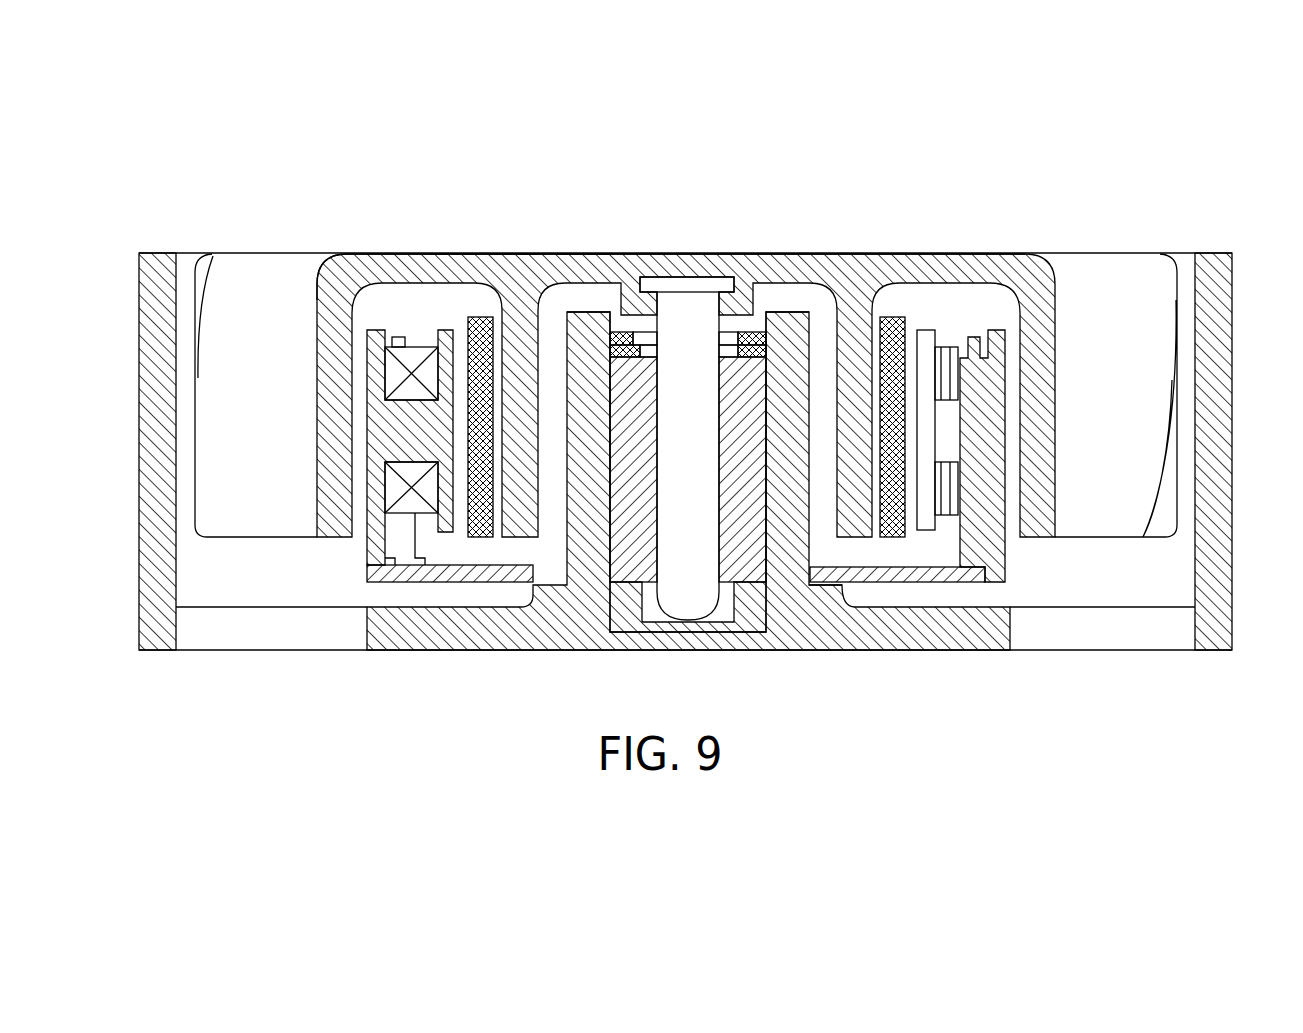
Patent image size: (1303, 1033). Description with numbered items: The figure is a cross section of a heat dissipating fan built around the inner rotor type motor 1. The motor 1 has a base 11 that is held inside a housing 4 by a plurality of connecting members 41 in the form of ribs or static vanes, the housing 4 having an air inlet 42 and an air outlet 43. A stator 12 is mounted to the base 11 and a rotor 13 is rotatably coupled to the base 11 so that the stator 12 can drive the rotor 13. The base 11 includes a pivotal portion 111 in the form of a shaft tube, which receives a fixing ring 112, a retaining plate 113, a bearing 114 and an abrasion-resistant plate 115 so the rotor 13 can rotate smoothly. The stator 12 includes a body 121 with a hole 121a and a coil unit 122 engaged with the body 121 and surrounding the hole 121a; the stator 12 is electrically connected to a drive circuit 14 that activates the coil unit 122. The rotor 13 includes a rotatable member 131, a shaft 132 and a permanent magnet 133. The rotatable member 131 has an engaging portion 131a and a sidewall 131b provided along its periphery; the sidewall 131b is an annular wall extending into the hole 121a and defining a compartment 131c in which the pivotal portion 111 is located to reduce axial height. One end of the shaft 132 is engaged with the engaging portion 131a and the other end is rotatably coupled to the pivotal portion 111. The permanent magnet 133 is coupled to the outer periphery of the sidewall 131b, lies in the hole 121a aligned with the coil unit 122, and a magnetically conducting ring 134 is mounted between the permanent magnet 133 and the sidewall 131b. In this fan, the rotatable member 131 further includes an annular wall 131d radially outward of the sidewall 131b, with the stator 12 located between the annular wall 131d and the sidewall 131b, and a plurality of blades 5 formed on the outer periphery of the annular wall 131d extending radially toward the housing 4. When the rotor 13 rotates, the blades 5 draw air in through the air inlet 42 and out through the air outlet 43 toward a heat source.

The inner rotor type motor 1 is at (270, 173).
The housing 4 is at (162, 257).
The connecting members 41 is at (300, 628).
The air inlet 42 is at (245, 240).
The air outlet 43 is at (198, 660).
The blades 5 is at (230, 253).
The base 11 is at (384, 648).
The pivotal portion 111 is at (583, 488).
The fixing ring 112 is at (757, 372).
The retaining plate 113 is at (782, 338).
The bearing 114 is at (630, 383).
The abrasion-resistant plate 115 is at (790, 637).
The stator 12 is at (1015, 366).
The body 121 is at (1000, 540).
The hole 121a is at (912, 338).
The coil unit 122 is at (957, 331).
The rotor 13 is at (887, 252).
The rotatable member 131 is at (543, 128).
The engaging portion 131a is at (578, 254).
The sidewall 131b is at (455, 255).
The compartment 131c is at (512, 255).
The annular wall 131d is at (298, 258).
The shaft 132 is at (695, 383).
The permanent magnet 133 is at (460, 318).
The magnetically conducting ring 134 is at (493, 315).
The drive circuit 14 is at (928, 583).